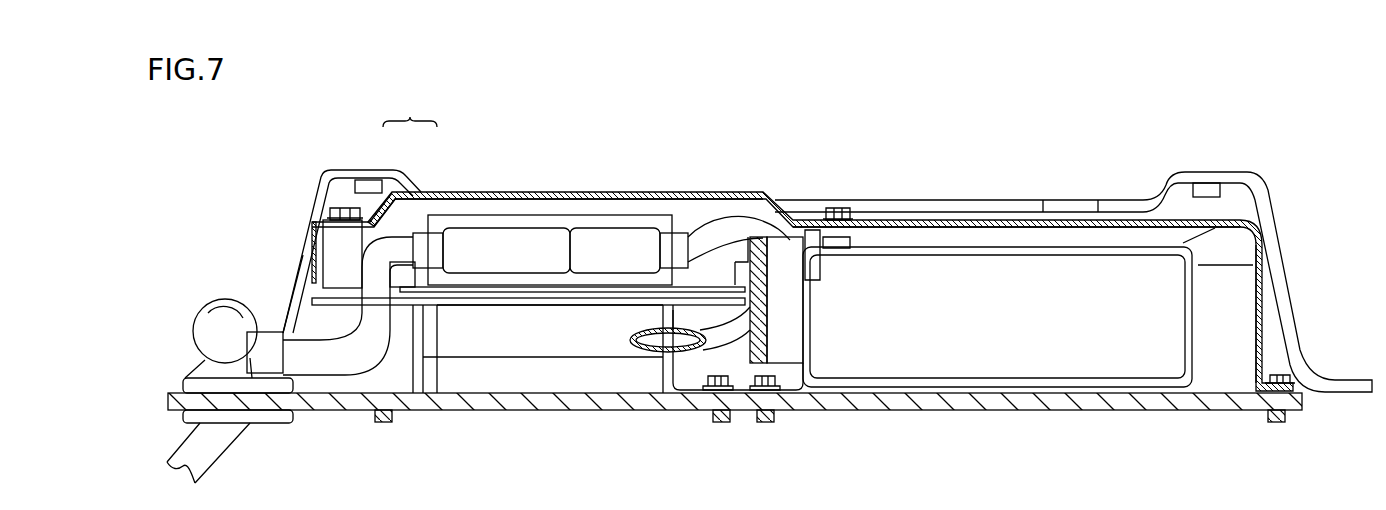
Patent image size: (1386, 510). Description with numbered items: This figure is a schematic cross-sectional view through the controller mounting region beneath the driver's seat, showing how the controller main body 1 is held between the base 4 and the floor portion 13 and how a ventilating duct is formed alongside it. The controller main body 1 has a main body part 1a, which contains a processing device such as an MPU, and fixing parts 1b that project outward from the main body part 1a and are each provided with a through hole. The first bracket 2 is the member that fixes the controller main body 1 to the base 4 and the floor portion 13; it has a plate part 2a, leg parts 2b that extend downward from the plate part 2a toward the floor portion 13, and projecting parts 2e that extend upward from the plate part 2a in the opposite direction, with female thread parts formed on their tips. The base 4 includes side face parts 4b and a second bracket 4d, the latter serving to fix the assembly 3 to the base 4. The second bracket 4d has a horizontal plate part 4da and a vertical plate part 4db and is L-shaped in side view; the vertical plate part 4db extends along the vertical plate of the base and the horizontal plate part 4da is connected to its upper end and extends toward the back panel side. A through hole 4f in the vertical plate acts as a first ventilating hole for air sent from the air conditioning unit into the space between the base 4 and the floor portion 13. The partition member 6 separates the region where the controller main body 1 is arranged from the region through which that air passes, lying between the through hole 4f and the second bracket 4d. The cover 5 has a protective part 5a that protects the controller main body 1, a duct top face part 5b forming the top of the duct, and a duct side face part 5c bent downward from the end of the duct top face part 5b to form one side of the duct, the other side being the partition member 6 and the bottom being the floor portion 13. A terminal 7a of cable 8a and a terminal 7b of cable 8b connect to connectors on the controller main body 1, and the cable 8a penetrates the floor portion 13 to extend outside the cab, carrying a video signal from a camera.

The controller main body 1 is at (418, 275).
The main body part 1a is at (688, 230).
The fixing part 1b is at (740, 293).
The first bracket 2 is at (403, 302).
The plate part 2a is at (487, 305).
The leg part 2b is at (413, 370).
The projecting part 2e is at (343, 263).
The assembly 3 is at (410, 111).
The base 4 is at (1184, 172).
The side face part 4b is at (293, 293).
The second bracket 4d is at (548, 397).
The horizontal plate part 4da is at (450, 310).
The vertical plate part 4db is at (603, 333).
The through hole 4f is at (995, 330).
The cover 5 is at (652, 193).
The protective part 5a is at (562, 193).
The duct top face part 5b is at (982, 221).
The duct side face part 5c is at (1265, 320).
The partition member 6 is at (785, 330).
The terminal 7a is at (511, 242).
The second capacitor 7b is at (617, 243).
The cable 8a is at (232, 318).
The cable 8b is at (750, 230).
The floor portion 13 is at (552, 401).